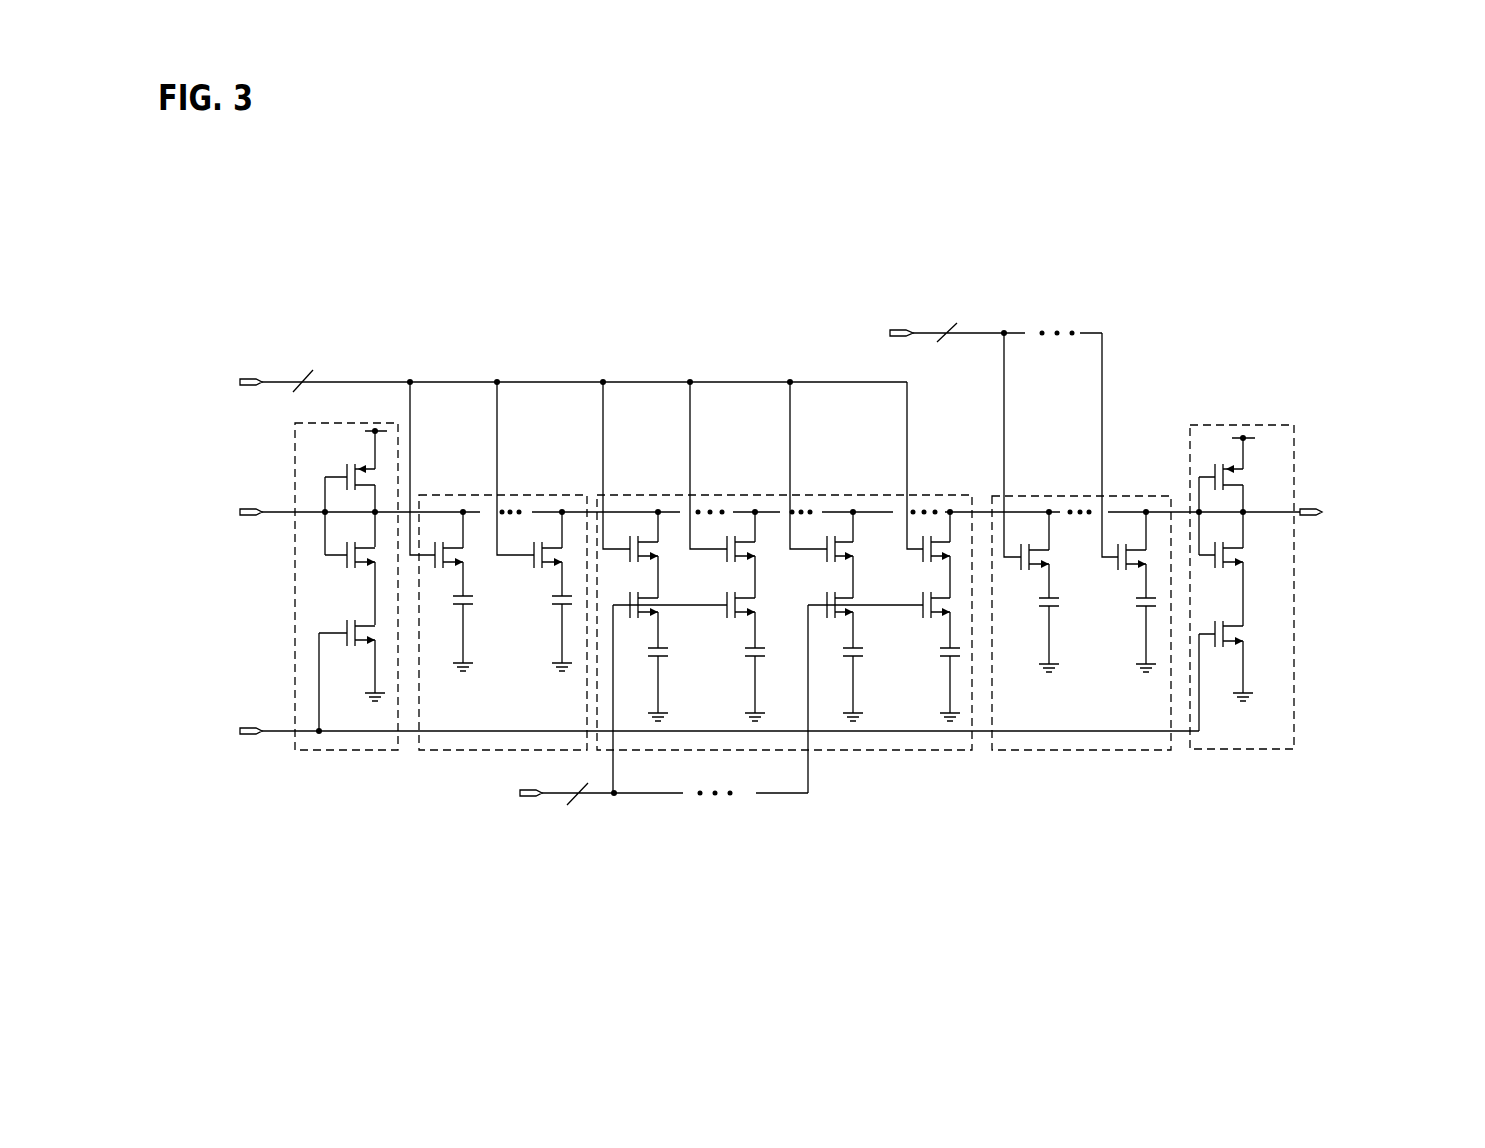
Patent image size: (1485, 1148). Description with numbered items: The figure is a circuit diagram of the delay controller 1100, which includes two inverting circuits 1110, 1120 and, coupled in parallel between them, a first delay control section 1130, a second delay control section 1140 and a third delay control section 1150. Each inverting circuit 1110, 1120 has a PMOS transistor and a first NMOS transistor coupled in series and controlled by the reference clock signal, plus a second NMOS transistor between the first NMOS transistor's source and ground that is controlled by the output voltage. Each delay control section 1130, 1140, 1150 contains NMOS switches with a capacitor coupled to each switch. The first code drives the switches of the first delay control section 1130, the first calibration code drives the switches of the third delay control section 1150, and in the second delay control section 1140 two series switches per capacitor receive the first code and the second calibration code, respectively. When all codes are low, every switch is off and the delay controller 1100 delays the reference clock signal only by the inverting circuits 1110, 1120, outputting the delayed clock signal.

The delay controller 1100 is at (785, 536).
The inverting circuit 1110 is at (335, 750).
The inverting circuit 1120 is at (1250, 750).
The first delay control section 1130 is at (455, 750).
The second delay control section 1140 is at (972, 750).
The third delay control section 1150 is at (1105, 750).